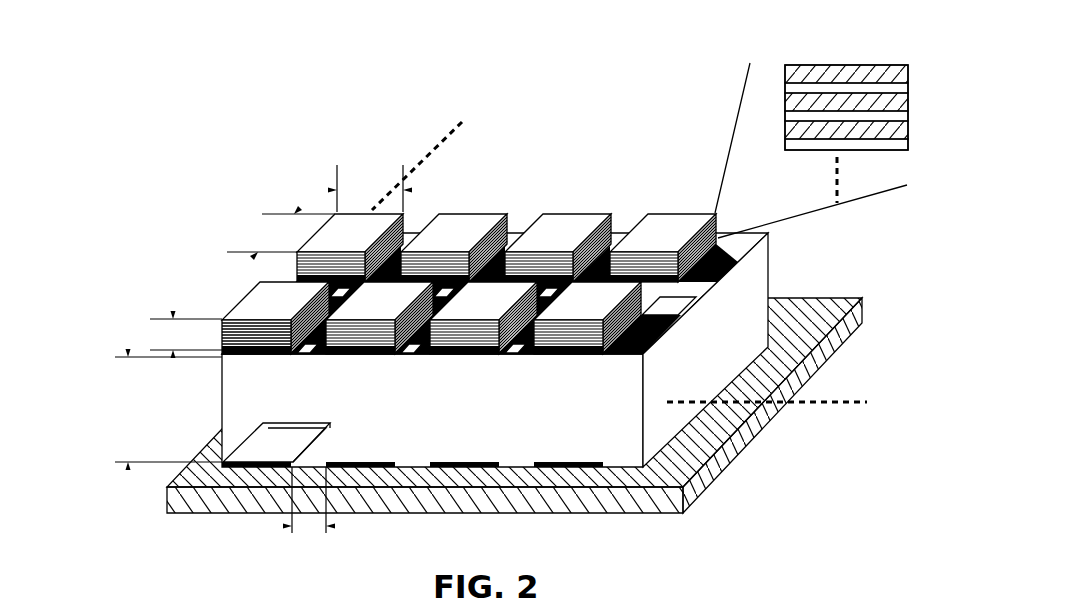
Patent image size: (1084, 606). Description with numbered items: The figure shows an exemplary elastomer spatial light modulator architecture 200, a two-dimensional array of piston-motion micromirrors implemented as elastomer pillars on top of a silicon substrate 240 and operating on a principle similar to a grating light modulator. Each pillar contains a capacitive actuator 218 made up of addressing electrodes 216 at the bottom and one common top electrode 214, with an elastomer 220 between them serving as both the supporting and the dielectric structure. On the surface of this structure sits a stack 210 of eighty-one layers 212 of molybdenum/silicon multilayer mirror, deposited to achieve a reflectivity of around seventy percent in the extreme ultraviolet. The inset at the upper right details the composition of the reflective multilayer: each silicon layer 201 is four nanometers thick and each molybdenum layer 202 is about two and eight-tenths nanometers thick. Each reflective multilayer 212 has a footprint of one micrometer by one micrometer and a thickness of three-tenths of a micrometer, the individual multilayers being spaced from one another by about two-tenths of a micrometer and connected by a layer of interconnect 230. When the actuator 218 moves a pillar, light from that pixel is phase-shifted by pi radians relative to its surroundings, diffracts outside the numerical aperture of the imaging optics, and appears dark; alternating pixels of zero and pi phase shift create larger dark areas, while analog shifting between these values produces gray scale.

The elastomer SLM architecture 200 is at (495, 288).
The silicon layer 201 is at (793, 73).
The molybdenum layer 202 is at (795, 90).
The stack 210 is at (233, 298).
The reflective multilayer 212 is at (188, 336).
The common top electrode 214 is at (222, 355).
The addressing electrodes 216 is at (223, 462).
The capacitive actuator 218 is at (388, 284).
The elastomer 220 is at (753, 290).
The interconnect 230 is at (660, 293).
The silicon substrate 240 is at (805, 308).